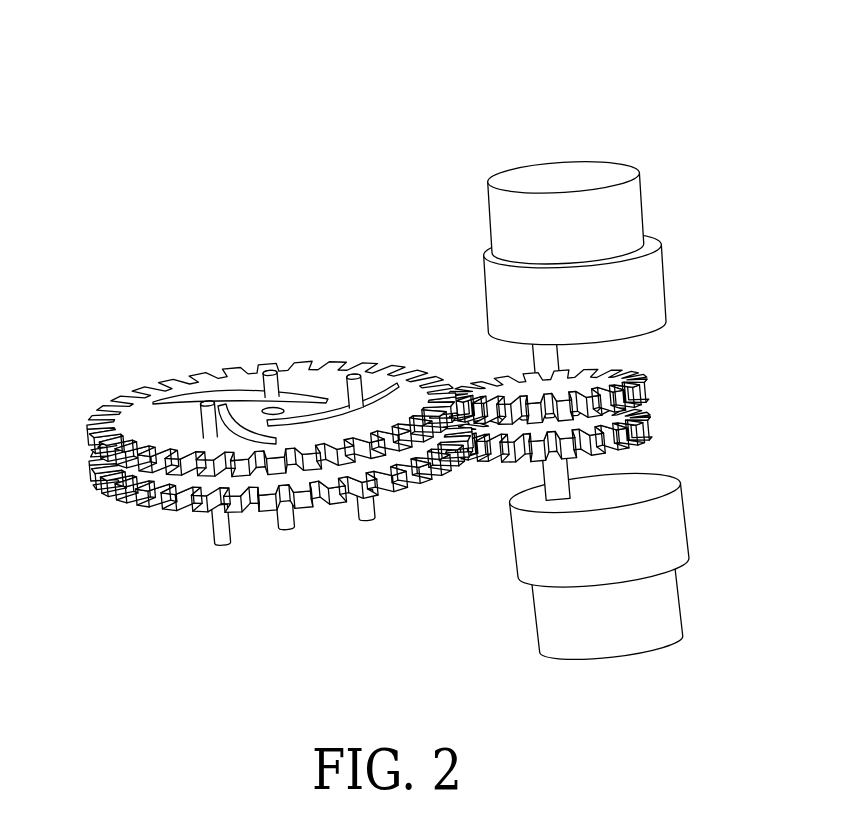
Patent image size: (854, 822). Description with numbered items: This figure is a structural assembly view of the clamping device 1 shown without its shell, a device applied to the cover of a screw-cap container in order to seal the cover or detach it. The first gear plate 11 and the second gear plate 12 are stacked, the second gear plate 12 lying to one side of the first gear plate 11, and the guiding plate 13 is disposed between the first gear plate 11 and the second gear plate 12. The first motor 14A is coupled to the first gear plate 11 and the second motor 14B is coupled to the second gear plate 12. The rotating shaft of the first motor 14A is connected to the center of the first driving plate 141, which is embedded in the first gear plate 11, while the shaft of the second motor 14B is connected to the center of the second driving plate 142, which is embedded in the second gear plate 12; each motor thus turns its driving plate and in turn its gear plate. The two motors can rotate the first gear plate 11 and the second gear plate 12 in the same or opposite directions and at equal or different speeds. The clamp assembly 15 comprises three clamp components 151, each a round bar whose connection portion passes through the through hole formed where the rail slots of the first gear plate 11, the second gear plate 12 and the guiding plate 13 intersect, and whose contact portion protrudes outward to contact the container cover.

The clamping device 1 is at (388, 110).
The first gear plate 11 is at (137, 415).
The second gear plate 12 is at (180, 489).
The guiding plate 13 is at (112, 490).
The first motor 14A is at (513, 230).
The second motor 14B is at (547, 632).
The first driving plate 141 is at (613, 380).
The second driving plate 142 is at (637, 433).
The clamp assembly 15 is at (317, 563).
The clamp component 151 is at (366, 508).